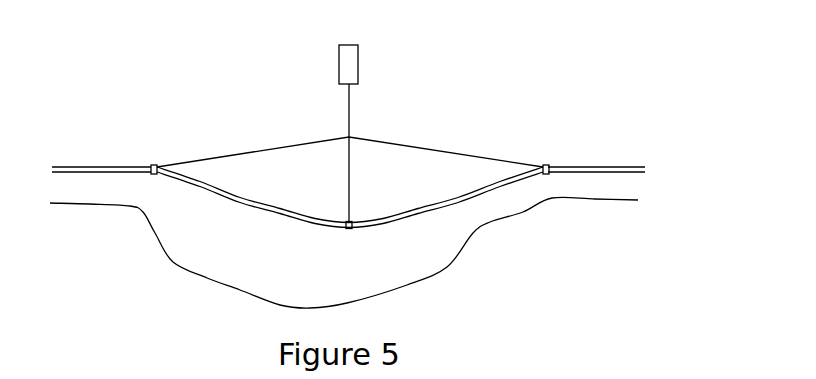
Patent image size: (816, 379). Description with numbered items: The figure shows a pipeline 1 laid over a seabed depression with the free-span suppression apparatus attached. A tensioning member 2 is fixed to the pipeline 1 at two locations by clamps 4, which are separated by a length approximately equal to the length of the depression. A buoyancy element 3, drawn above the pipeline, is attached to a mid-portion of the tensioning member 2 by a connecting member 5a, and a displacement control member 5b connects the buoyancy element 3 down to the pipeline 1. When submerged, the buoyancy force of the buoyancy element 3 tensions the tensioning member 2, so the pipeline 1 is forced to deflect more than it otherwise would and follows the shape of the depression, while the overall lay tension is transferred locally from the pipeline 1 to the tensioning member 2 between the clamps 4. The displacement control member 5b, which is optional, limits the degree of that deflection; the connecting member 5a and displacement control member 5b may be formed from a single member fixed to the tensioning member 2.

The pipeline 1 is at (128, 163).
The tensioning member 2 is at (260, 139).
The buoyancy element 3 is at (348, 56).
The clamps 4 is at (536, 158).
The connecting member 5a is at (342, 126).
The displacement control member 5b is at (362, 180).